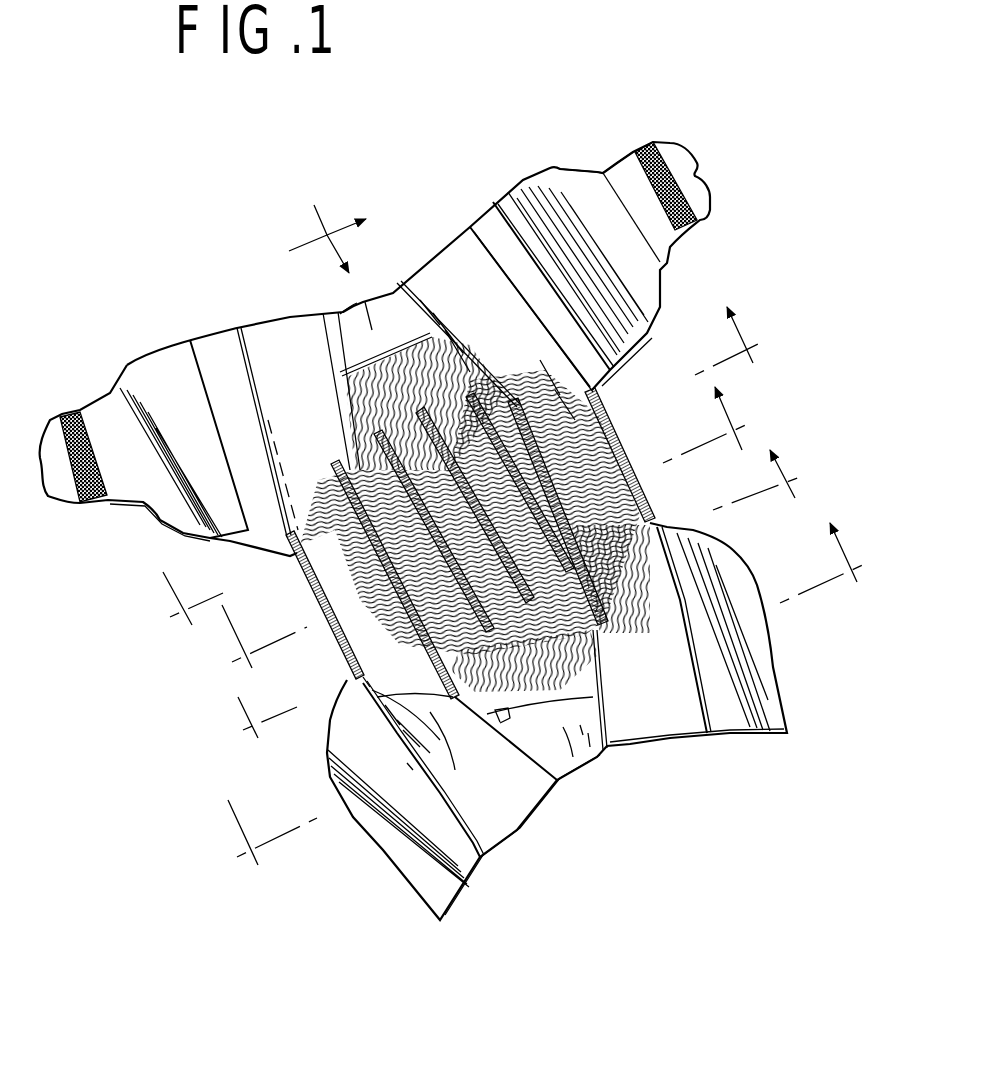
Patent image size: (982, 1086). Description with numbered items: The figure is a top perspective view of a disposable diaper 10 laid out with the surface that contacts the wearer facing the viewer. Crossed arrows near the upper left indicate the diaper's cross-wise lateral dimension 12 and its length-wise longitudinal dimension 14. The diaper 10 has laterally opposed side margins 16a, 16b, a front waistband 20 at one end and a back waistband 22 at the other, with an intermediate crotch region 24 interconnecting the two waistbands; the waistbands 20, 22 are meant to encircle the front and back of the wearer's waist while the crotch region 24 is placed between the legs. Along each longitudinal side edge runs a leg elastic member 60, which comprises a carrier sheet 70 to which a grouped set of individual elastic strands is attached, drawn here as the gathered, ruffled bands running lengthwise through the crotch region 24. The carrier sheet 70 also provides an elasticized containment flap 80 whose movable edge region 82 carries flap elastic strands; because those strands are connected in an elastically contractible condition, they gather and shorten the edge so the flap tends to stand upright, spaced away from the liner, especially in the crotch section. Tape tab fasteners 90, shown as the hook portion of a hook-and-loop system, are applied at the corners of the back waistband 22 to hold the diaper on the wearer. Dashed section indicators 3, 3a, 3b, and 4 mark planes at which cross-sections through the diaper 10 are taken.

The diaper 10 is at (765, 281).
The lateral dimension 12 is at (347, 227).
The longitudinal dimension 14 is at (322, 221).
The side margin 16a is at (306, 578).
The side margin 16b is at (612, 422).
The front waistband 20 is at (580, 725).
The back waistband 22 is at (462, 253).
The crotch region 24 is at (645, 518).
The leg elastic member 60 is at (645, 463).
The carrier sheet 70 is at (655, 692).
The containment flap 80 is at (348, 648).
The movable edge region 82 is at (500, 722).
The tape tab fasteners 90 is at (623, 163).
The section line 3- 3 is at (493, 541).
The section line 3a- 3a is at (531, 608).
The section line 3b- 3b is at (479, 481).
The section line 4- 4 is at (553, 705).